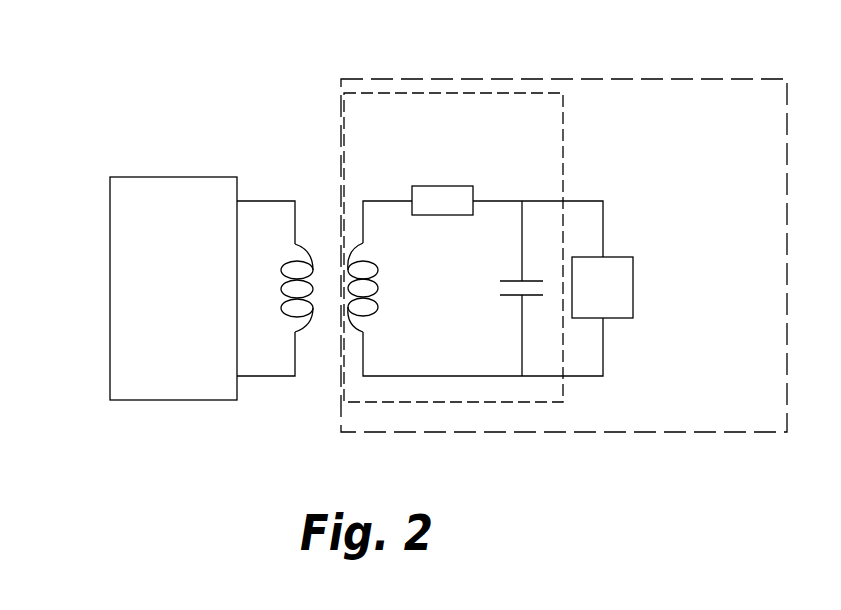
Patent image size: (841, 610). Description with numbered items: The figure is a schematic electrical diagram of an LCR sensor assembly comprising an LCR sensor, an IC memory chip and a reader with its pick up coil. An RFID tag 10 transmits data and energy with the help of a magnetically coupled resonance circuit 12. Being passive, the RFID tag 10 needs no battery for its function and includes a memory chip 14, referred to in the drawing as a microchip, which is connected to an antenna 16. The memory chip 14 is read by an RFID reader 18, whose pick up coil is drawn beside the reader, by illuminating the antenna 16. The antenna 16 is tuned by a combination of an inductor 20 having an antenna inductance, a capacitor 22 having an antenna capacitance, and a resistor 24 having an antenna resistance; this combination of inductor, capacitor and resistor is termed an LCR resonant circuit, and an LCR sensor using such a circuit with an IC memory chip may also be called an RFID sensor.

The RFID tag 10 is at (660, 79).
The magnetically coupled resonance circuit 12 is at (390, 376).
The memory chip 14 is at (633, 265).
The antenna 16 is at (380, 200).
The RFID reader 18 is at (110, 187).
The inductor 20 is at (352, 253).
The capacitor 22 is at (543, 296).
The resistor 24 is at (473, 186).